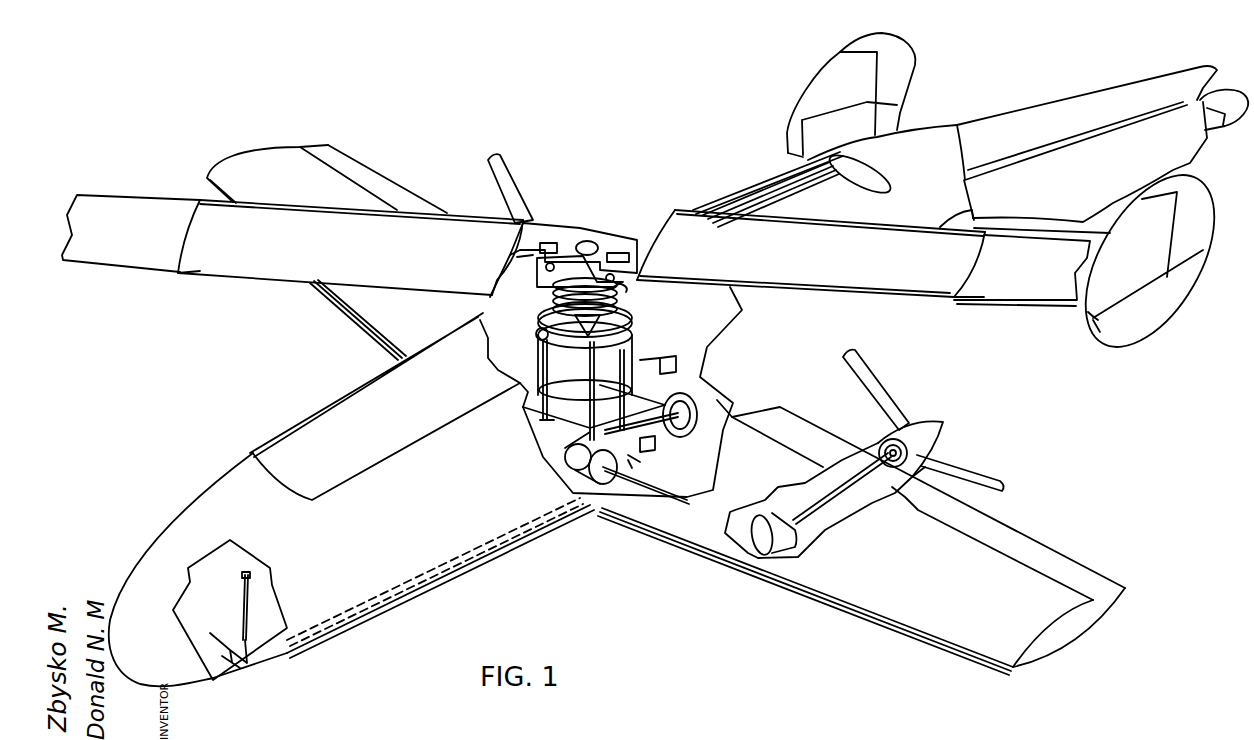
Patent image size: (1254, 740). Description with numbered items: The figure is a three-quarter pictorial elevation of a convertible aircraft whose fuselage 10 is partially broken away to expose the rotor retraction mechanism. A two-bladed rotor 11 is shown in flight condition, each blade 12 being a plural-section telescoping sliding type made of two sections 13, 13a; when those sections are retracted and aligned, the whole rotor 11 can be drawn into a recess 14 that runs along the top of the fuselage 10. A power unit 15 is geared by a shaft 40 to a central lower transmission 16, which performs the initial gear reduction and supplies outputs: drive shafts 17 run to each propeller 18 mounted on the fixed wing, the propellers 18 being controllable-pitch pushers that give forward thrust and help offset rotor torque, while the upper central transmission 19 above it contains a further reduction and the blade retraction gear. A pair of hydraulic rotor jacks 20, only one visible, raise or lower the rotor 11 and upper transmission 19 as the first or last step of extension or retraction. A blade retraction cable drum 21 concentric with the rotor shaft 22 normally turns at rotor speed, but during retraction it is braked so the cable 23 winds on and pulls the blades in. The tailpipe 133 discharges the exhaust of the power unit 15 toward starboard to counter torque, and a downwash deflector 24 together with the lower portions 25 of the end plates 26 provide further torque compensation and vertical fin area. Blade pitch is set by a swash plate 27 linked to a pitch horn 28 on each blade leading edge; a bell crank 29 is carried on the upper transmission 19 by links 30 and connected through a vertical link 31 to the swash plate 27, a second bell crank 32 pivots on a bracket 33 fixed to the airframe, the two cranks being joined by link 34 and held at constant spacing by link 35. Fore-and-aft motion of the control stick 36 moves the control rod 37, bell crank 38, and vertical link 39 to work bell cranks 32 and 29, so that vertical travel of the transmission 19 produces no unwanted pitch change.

The fuselage 10 is at (220, 478).
The two-bladed rotor 11 is at (618, 240).
The blade 12 is at (222, 283).
The blade section 13 is at (298, 251).
The blade section 13a is at (137, 239).
The recess 14 is at (303, 428).
The power unit 15 is at (611, 392).
The central lower transmission 16 is at (577, 470).
The drive shaft 17 is at (648, 485).
The propeller 18 is at (507, 165).
The upper central transmission 19 is at (541, 363).
The hydraulic rotor jack 20 is at (538, 348).
The blade retraction cable drum 21 is at (553, 316).
The rotor shaft 22 is at (587, 241).
The cable 23 is at (553, 298).
The downwash deflector 24 is at (1108, 89).
The lower portion of end plate 25 is at (1131, 341).
The end plate 26 is at (816, 81).
The swash plate 27 is at (632, 318).
The pitch horn 28 is at (638, 287).
The bell crank 29 is at (592, 350).
The link 30 is at (618, 338).
The vertical link 31 is at (590, 364).
The second bell crank 32 is at (681, 364).
The bracket 33 is at (666, 358).
The link 34 is at (667, 415).
The link 35 is at (635, 393).
The control stick 36 is at (241, 578).
The control rod 37 is at (338, 610).
The bell crank 38 is at (648, 469).
The vertical link 39 is at (622, 392).
The shaft 40 is at (658, 442).
The tailpipe 133 is at (1232, 125).